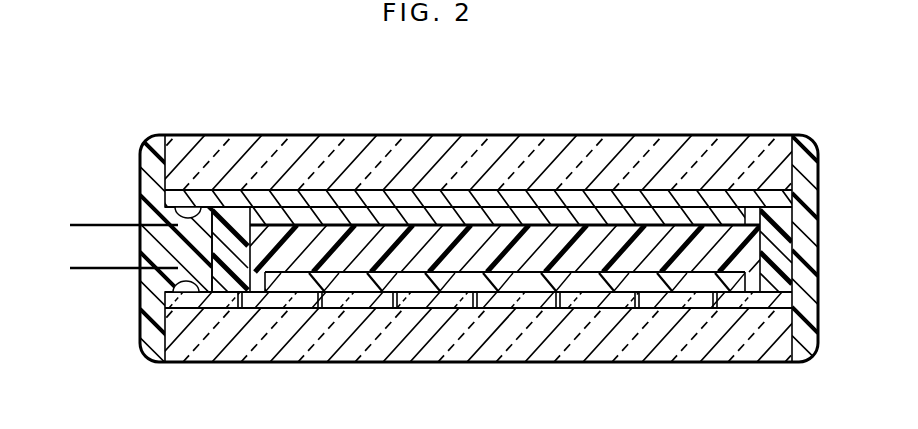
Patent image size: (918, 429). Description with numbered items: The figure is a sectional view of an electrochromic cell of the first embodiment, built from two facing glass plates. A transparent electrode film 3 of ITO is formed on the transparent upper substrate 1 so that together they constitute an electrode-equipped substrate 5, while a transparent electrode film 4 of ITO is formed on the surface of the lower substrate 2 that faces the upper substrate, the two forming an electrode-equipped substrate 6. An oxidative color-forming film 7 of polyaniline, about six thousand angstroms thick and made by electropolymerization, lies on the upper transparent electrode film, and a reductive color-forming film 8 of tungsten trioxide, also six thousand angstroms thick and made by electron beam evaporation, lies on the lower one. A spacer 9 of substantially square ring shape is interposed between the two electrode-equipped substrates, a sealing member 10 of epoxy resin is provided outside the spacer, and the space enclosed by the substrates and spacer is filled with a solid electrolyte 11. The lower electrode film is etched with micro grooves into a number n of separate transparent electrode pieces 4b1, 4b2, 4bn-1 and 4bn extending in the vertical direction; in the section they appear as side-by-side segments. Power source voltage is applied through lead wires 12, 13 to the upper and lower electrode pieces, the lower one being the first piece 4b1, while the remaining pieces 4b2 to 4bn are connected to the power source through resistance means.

The transparent upper substrate 1 is at (391, 136).
The lower substrate 2 is at (458, 361).
The transparent electrode film 3 is at (433, 186).
The transparent electrode film 4 is at (497, 309).
The electrode-equipped substrate 5 is at (438, 98).
The electrode-equipped substrate 6 is at (487, 395).
The oxidative color-forming film 7 is at (578, 197).
The reductive color-forming film 8 is at (583, 290).
The spacer 9 is at (784, 245).
The sealing member 10 is at (140, 324).
The solid electrolyte 11 is at (660, 225).
The lead wire 12 is at (95, 223).
The lead wire 13 is at (93, 270).
The transparent electrode piece 4bn is at (200, 310).
The transparent electrode piece 4bn-1 is at (290, 310).
The transparent electrode piece 4b2 is at (670, 300).
The transparent electrode piece 4b1 is at (750, 300).